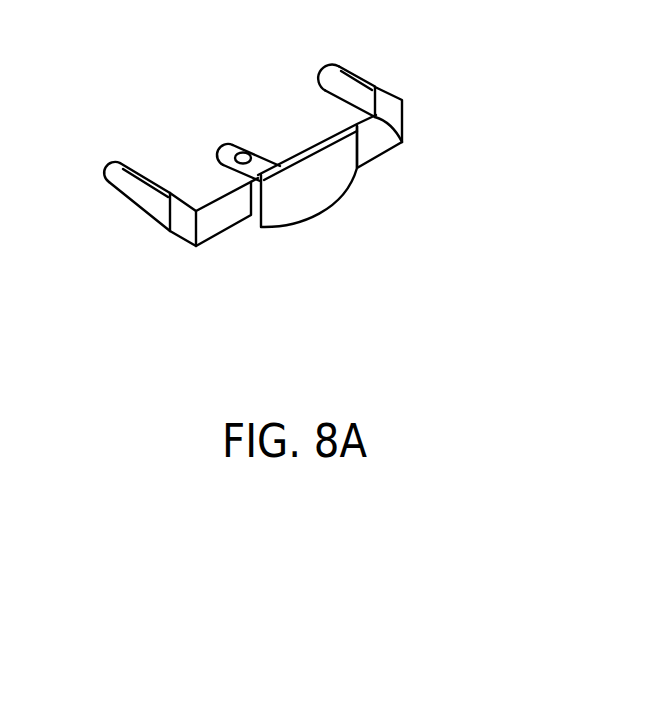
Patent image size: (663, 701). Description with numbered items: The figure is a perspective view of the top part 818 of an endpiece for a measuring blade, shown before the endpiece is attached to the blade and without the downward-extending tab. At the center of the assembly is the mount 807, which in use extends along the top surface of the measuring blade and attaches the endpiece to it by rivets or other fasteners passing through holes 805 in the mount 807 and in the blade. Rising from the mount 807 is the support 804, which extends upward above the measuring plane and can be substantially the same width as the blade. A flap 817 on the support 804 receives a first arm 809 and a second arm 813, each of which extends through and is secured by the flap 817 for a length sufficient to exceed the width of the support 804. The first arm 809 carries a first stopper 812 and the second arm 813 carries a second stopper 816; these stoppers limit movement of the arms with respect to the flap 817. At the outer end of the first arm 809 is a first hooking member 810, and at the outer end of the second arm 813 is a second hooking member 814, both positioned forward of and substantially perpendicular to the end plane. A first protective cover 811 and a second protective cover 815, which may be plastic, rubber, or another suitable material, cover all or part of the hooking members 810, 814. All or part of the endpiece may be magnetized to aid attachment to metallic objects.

The support 804 is at (322, 200).
The holes 805 is at (241, 155).
The mount 807 is at (229, 150).
The first arm 809 is at (392, 123).
The first hooking member 810 is at (386, 90).
The first protective cover 811 is at (338, 78).
The first stopper 812 is at (388, 128).
The second arm 813 is at (222, 228).
The second hooking member 814 is at (188, 210).
The second protective cover 815 is at (120, 183).
The second stopper 816 is at (245, 192).
The flap 817 is at (300, 150).
The top part 818 is at (270, 177).